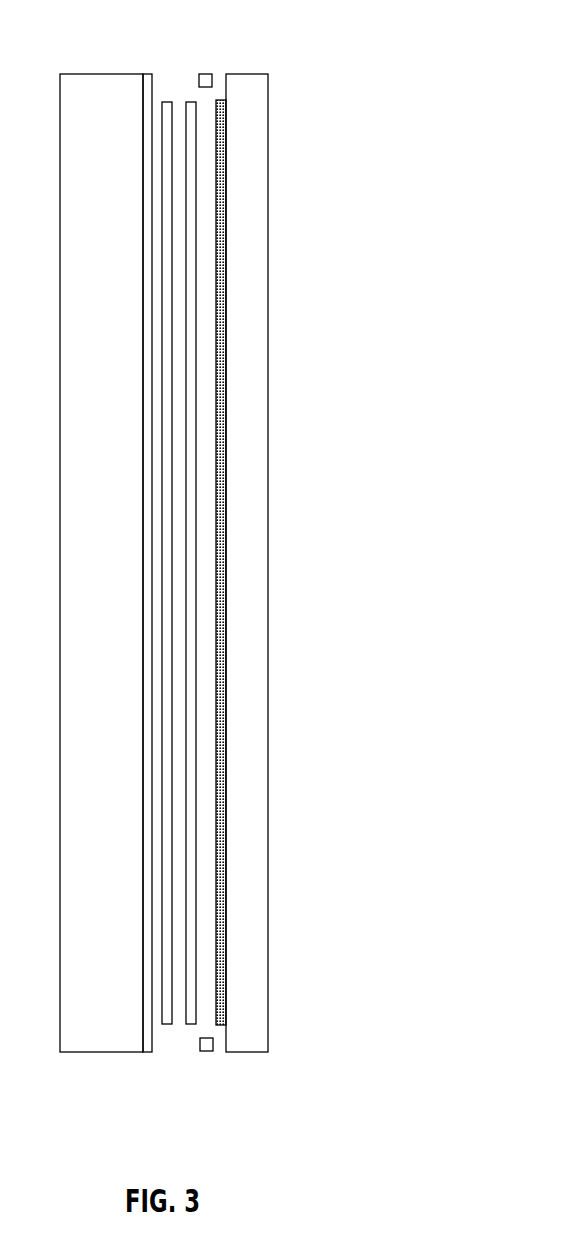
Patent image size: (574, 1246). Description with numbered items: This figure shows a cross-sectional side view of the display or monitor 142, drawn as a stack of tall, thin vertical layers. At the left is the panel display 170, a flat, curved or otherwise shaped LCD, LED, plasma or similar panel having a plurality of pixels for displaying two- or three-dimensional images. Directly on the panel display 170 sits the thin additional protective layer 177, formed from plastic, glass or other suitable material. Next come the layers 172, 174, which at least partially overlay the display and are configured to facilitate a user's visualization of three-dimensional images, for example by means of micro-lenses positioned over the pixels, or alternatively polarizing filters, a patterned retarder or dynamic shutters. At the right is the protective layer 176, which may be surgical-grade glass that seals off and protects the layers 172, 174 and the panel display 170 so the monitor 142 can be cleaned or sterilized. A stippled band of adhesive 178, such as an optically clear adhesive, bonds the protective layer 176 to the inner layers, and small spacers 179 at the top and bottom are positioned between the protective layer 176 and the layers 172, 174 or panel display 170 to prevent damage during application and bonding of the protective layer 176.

The display or monitor 142 is at (375, 80).
The panel display 170 is at (102, 73).
The additional protective layer 177 is at (148, 73).
The layer 172 is at (166, 1029).
The layer 174 is at (190, 97).
The adhesive 178 is at (222, 1027).
The protective layer 176 is at (271, 1021).
The spacers 179 is at (210, 73).